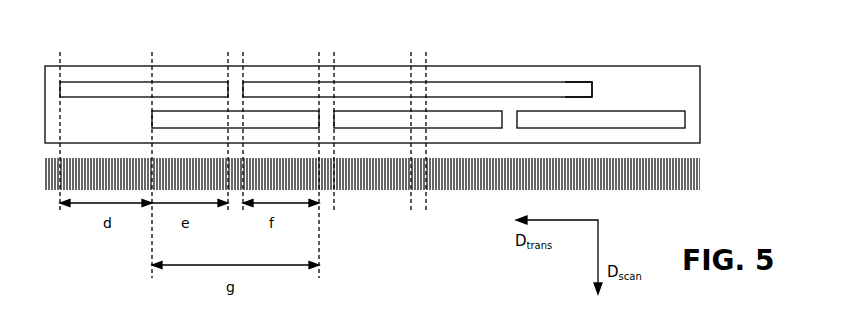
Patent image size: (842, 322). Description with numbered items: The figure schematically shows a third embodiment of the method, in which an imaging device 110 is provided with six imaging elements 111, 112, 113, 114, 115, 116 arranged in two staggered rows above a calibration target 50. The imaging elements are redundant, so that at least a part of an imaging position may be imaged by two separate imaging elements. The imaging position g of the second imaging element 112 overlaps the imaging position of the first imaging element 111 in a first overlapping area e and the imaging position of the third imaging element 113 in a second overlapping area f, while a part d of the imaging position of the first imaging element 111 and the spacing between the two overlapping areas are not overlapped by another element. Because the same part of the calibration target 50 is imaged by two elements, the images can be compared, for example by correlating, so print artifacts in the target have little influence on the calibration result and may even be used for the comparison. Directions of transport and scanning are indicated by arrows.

The imaging device 110 is at (710, 115).
The first imaging element 111 is at (98, 88).
The second imaging element 112 is at (173, 118).
The third imaging element 113 is at (357, 88).
The fourth imaging element 114 is at (402, 120).
The fifth imaging element 115 is at (590, 89).
The sixth imaging element 116 is at (632, 118).
The calibration target 50 is at (710, 172).